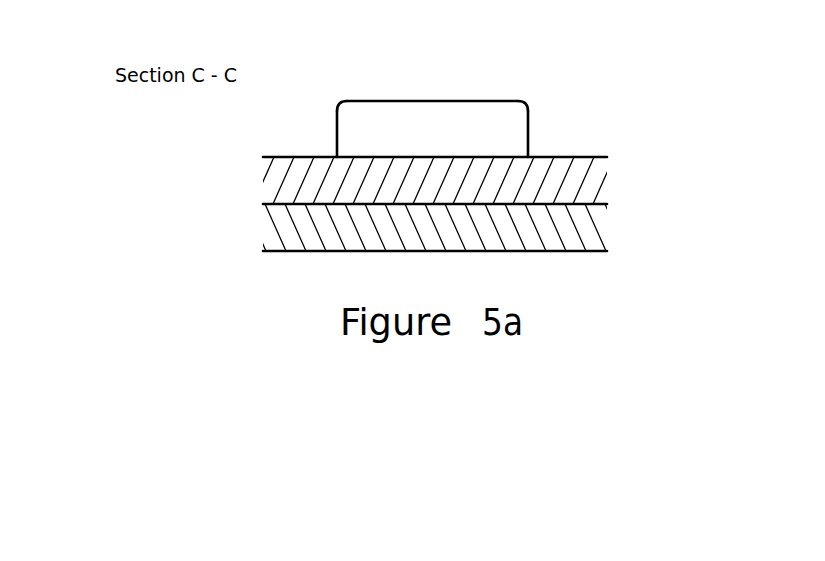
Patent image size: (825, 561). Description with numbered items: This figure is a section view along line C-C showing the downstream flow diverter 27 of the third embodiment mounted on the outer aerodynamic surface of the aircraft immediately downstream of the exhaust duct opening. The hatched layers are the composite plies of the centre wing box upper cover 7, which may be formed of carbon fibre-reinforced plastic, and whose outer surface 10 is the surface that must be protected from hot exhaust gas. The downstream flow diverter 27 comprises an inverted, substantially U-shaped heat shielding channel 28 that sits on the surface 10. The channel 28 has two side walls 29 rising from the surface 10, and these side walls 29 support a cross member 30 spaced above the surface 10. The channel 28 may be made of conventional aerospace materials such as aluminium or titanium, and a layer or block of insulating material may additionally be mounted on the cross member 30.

The centre wing box upper cover 7 is at (603, 182).
The surface 10 is at (604, 153).
The downstream flow diverter 27 is at (433, 92).
The heat shielding channel 28 is at (342, 102).
The side walls 29 is at (337, 128).
The cross member 30 is at (438, 100).